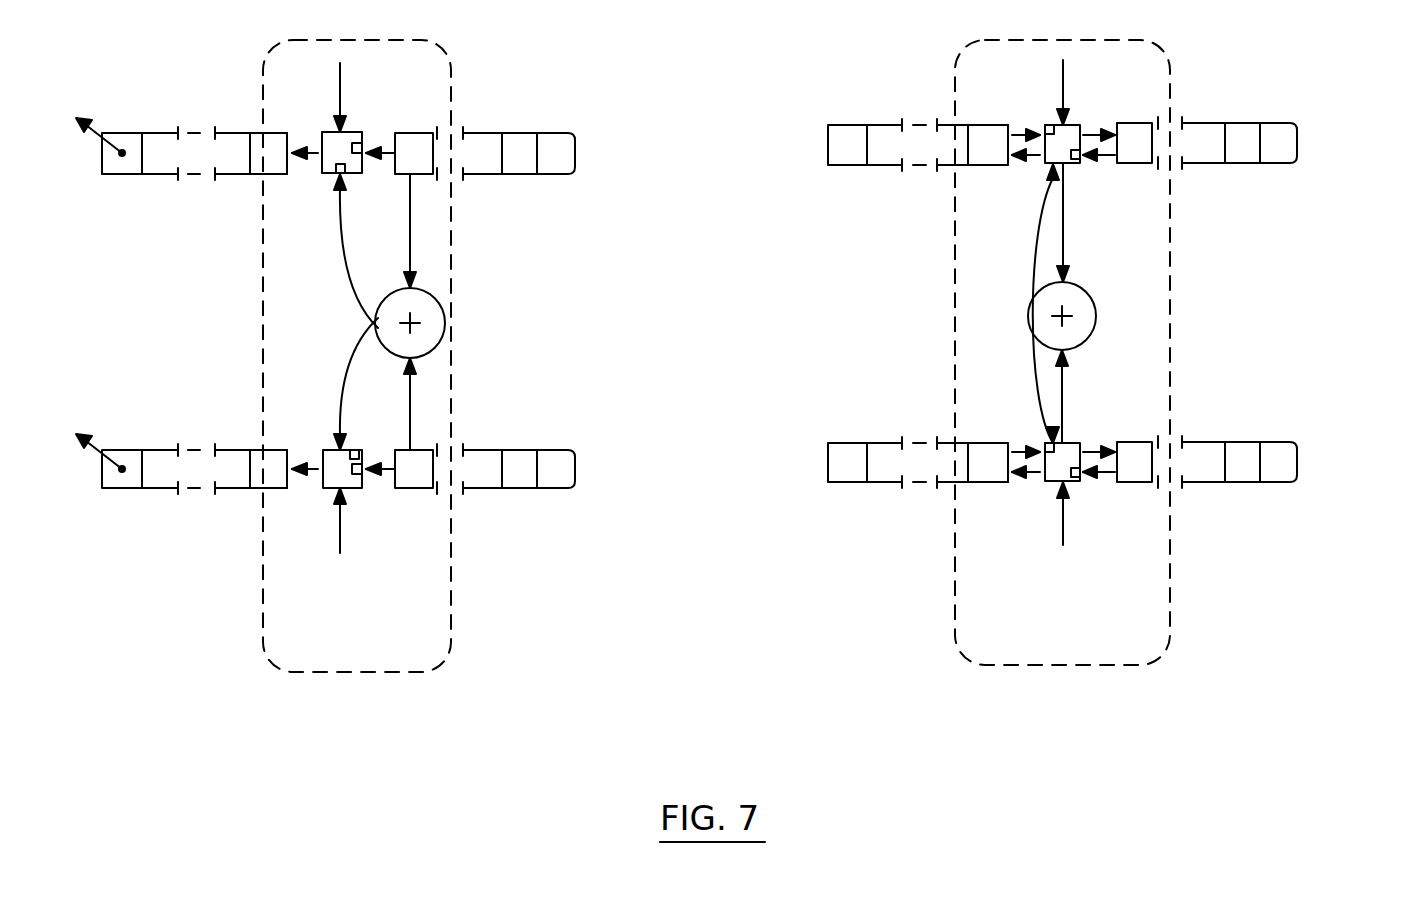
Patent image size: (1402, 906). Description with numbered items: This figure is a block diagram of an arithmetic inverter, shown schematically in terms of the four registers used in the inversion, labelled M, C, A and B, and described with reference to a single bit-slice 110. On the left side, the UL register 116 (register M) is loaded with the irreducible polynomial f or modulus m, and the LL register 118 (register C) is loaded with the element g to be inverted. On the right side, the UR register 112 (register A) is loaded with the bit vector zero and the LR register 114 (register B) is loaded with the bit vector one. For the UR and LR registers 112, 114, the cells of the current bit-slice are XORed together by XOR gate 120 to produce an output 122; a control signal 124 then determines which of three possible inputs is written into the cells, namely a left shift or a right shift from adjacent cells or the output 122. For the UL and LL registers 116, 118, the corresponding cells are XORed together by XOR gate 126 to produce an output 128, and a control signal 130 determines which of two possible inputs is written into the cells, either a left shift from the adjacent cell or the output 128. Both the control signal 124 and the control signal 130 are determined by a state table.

The bit-slice 110 is at (437, 657).
The UR register 112 is at (1292, 164).
The LR register 114 is at (1292, 483).
The UL register 116 is at (573, 174).
The LL register 118 is at (573, 488).
The XOR gate 120 is at (1096, 318).
The output 122 is at (1037, 275).
The control signal 124 is at (1063, 85).
The XOR gate 126 is at (445, 325).
The output 128 is at (353, 292).
The control signal 130 is at (340, 92).